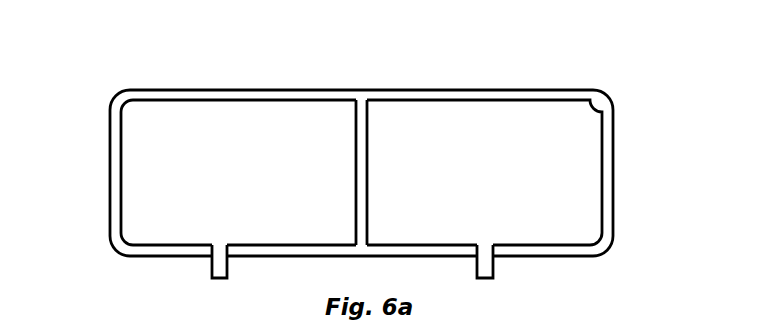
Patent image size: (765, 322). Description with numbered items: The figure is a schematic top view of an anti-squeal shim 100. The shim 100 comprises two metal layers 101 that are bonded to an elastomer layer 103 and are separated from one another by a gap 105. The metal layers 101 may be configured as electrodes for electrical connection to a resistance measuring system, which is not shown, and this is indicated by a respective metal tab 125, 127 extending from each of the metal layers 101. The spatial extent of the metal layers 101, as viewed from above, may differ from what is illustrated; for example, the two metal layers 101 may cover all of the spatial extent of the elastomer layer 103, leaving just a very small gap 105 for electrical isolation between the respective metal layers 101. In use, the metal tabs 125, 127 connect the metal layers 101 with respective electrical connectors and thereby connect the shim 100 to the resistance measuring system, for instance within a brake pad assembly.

The anti-squeal shim 100 is at (591, 67).
The metal layers 101 is at (121, 153).
The elastomer layer 103 is at (110, 220).
The gap 105 is at (361, 108).
The metal tab 125 is at (211, 268).
The metal tab 127 is at (494, 270).